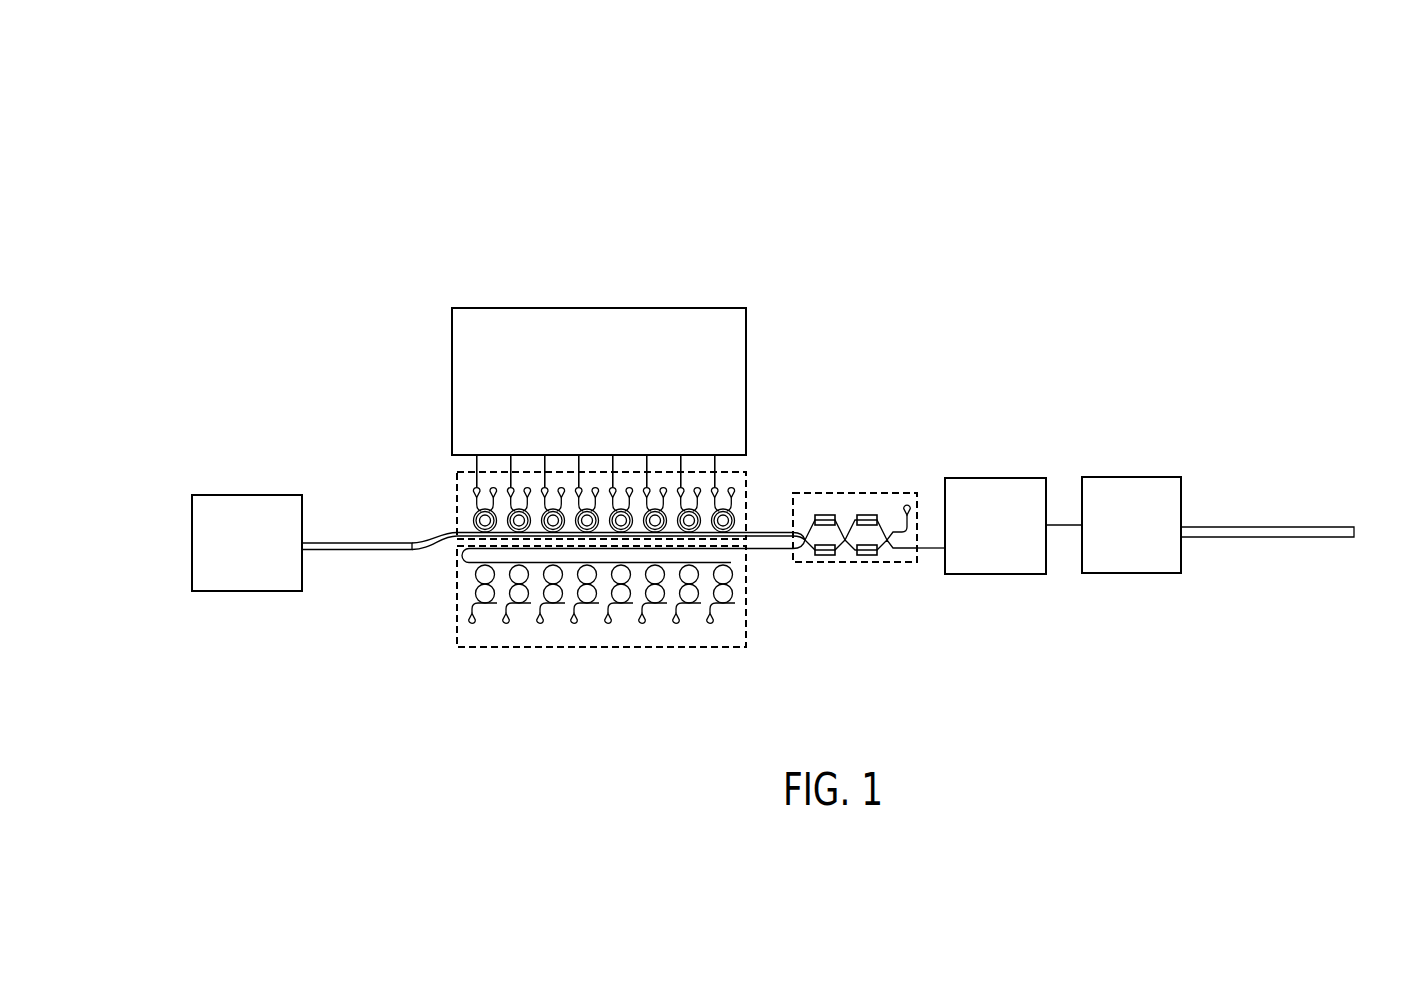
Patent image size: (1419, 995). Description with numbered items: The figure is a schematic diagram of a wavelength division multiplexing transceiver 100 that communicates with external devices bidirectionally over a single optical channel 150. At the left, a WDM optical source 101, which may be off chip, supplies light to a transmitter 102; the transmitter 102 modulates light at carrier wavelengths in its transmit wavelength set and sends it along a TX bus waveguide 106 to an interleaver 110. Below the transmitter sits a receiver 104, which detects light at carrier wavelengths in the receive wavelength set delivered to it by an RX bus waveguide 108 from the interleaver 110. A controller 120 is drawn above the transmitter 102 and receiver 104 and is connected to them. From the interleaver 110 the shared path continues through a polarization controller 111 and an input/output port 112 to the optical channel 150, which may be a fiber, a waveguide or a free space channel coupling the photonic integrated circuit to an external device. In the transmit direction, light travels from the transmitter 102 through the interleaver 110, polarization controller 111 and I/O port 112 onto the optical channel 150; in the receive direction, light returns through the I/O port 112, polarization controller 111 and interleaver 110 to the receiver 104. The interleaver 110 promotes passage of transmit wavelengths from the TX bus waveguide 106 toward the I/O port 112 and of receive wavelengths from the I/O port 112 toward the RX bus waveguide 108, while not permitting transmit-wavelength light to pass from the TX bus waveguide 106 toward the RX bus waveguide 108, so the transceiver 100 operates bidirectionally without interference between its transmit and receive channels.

The transceiver 100 is at (742, 386).
The WDM optical source 101 is at (247, 495).
The transmitter (TX) 102 is at (567, 497).
The receiver (RX) 104 is at (567, 612).
The TX bus waveguide 106 is at (601, 433).
The RX bus waveguide 108 is at (670, 610).
The interleaver 110 is at (859, 474).
The polarization controller 111 is at (997, 478).
The input/output (I/O) port 112 is at (1132, 477).
The controller 120 is at (603, 308).
The optical channel 150 is at (1280, 485).